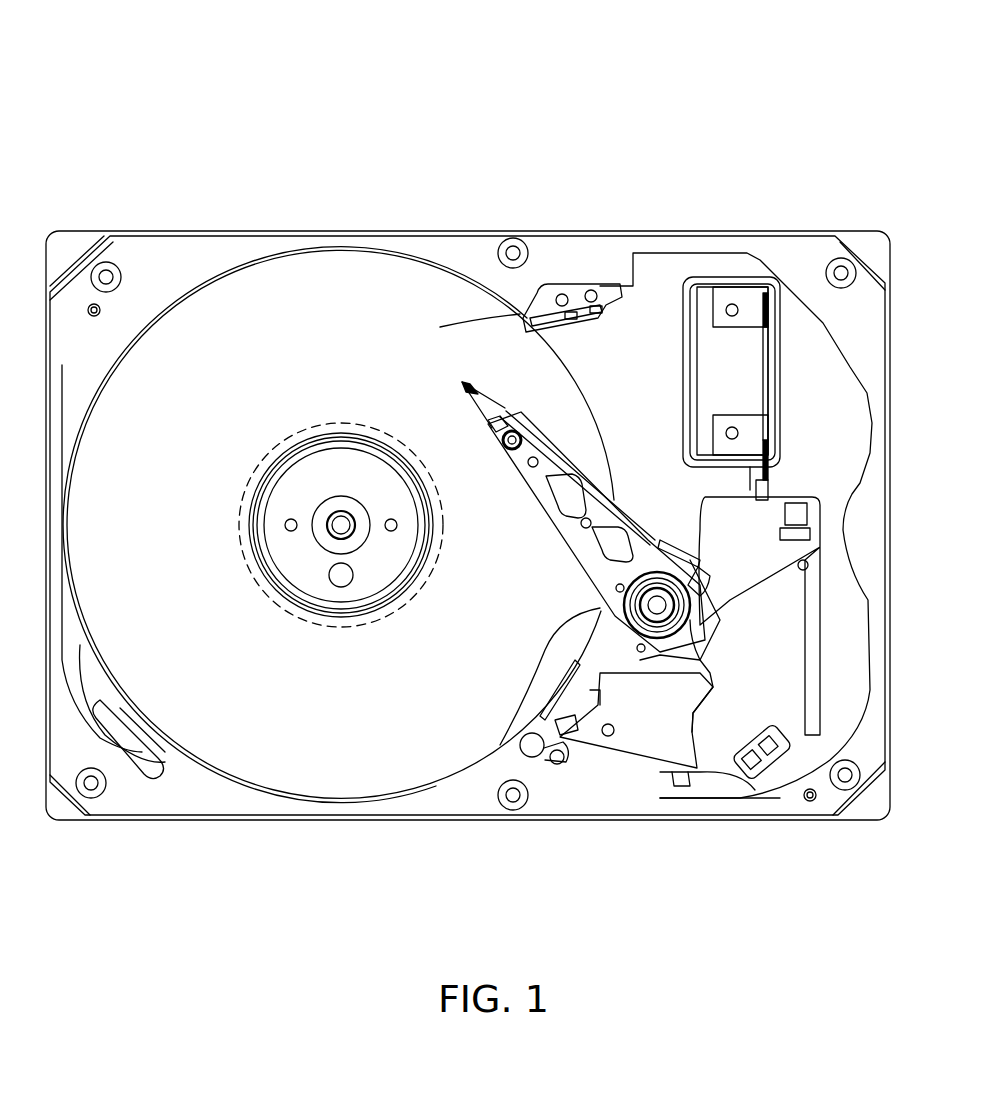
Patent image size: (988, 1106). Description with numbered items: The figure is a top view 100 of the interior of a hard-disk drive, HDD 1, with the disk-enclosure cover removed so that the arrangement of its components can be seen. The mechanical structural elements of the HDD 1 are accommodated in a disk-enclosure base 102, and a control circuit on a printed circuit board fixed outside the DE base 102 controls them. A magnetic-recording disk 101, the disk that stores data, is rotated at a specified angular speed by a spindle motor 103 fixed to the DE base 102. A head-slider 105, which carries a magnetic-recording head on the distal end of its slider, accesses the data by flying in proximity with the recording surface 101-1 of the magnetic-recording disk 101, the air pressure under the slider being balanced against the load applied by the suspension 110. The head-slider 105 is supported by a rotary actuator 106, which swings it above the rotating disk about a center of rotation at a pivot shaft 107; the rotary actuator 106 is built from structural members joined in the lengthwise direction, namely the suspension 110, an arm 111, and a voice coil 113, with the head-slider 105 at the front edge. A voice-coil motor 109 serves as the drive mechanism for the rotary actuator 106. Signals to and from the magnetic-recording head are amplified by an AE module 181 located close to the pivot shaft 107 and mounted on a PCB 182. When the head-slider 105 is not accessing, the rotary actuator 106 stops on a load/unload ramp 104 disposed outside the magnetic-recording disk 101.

The top view 100 is at (122, 87).
The HDD 1 is at (243, 208).
The magnetic-recording disk 101 is at (590, 395).
The recording surface 101-1 is at (322, 388).
The disk-enclosure base 102 is at (394, 822).
The spindle motor 103 is at (318, 625).
The load/unload ramp 104 is at (525, 325).
The head-slider 105 is at (472, 393).
The rotary actuator 106 is at (518, 494).
The pivot shaft 107 is at (648, 607).
The voice-coil motor 109 is at (597, 770).
The suspension 110 is at (490, 422).
The arm 111 is at (570, 542).
The voice coil 113 is at (692, 732).
The AE module 181 is at (690, 555).
The PCB 182 is at (705, 580).